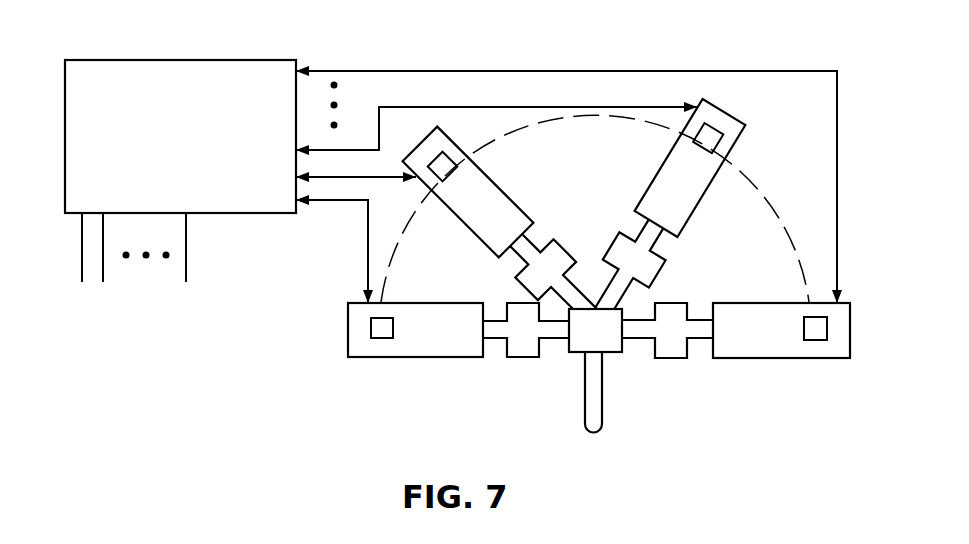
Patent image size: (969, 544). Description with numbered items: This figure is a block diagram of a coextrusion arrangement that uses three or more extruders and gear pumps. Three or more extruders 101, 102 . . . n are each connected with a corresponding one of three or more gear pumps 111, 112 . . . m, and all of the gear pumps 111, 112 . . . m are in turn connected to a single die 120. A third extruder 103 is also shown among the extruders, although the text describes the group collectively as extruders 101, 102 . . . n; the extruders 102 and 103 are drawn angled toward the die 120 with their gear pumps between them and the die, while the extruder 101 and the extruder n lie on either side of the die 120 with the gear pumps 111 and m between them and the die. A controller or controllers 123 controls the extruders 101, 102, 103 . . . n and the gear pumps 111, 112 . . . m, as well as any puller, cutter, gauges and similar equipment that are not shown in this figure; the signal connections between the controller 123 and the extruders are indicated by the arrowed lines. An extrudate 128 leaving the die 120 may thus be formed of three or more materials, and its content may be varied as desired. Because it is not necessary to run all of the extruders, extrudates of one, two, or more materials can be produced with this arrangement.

The controller (or controllers) 123 is at (112, 58).
The extruder 101 is at (420, 347).
The extruder 102 is at (460, 208).
The third dispensing module 103 is at (672, 170).
The gear pump 111 is at (524, 349).
The gear pump 112 is at (560, 245).
The die 120 is at (612, 318).
The extrudate 128 is at (602, 413).
The gear pump m is at (672, 350).
The extruder n is at (768, 348).